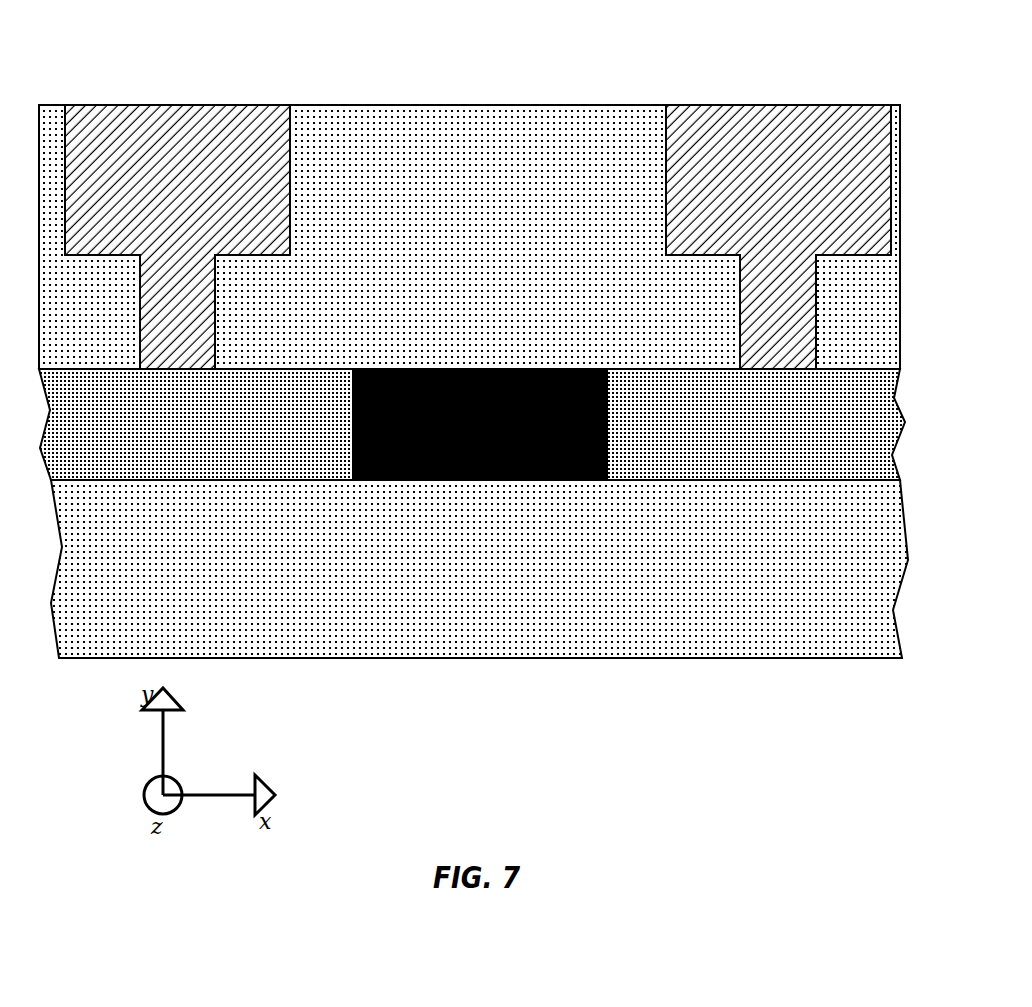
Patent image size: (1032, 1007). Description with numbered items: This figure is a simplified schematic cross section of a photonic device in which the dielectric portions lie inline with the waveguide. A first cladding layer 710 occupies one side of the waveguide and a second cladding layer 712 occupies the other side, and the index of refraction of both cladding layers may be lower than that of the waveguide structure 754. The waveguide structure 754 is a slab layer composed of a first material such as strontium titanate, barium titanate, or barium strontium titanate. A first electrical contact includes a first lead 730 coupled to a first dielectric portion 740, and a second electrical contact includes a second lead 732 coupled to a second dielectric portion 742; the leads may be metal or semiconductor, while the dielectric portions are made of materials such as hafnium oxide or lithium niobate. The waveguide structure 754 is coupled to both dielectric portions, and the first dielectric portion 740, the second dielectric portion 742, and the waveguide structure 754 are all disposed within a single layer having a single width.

The first cladding layer 710 is at (802, 616).
The second cladding layer 712 is at (362, 180).
The first lead 730 is at (158, 105).
The second lead 732 is at (760, 105).
The first dielectric portion 740 is at (255, 369).
The second dielectric portion 742 is at (677, 480).
The waveguide structure 754 is at (441, 369).